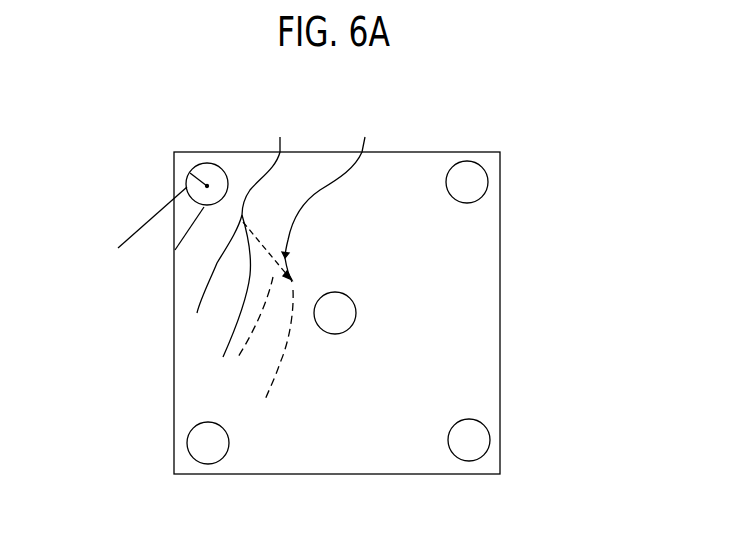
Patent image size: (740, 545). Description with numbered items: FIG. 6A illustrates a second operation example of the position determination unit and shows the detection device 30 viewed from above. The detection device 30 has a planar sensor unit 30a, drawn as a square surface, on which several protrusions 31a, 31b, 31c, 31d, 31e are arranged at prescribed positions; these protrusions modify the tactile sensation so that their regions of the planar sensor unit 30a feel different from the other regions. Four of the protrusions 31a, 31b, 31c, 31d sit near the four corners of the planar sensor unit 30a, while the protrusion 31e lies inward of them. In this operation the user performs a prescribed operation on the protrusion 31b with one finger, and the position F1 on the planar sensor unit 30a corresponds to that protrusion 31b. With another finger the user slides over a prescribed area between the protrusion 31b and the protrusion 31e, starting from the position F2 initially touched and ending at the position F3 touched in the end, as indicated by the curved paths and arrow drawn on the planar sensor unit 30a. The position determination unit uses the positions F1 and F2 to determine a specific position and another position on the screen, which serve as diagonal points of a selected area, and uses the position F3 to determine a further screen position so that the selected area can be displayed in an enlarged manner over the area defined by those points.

The detection device 30 is at (352, 460).
The planar sensor unit 30a is at (460, 382).
The protrusion 31a is at (197, 440).
The protrusion 31b is at (205, 163).
The protrusion 31c is at (480, 182).
The protrusion 31d is at (478, 438).
The protrusion 31e is at (350, 307).
The position corresponding to the protrusion F1 is at (187, 172).
The position initially touched by the other finger F2 is at (245, 234).
The position touched by the other finger in the end F3 is at (323, 256).